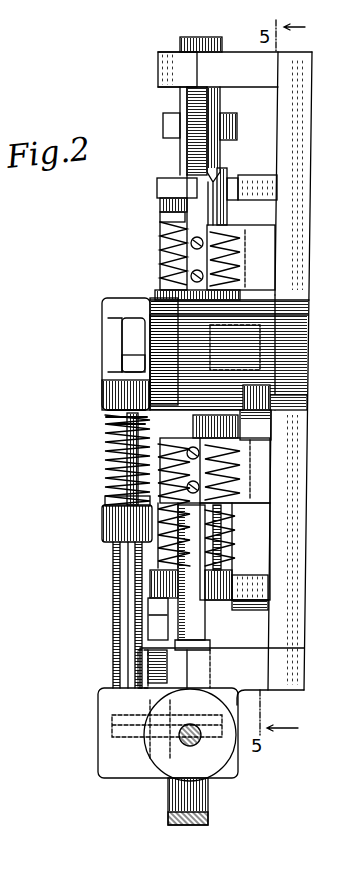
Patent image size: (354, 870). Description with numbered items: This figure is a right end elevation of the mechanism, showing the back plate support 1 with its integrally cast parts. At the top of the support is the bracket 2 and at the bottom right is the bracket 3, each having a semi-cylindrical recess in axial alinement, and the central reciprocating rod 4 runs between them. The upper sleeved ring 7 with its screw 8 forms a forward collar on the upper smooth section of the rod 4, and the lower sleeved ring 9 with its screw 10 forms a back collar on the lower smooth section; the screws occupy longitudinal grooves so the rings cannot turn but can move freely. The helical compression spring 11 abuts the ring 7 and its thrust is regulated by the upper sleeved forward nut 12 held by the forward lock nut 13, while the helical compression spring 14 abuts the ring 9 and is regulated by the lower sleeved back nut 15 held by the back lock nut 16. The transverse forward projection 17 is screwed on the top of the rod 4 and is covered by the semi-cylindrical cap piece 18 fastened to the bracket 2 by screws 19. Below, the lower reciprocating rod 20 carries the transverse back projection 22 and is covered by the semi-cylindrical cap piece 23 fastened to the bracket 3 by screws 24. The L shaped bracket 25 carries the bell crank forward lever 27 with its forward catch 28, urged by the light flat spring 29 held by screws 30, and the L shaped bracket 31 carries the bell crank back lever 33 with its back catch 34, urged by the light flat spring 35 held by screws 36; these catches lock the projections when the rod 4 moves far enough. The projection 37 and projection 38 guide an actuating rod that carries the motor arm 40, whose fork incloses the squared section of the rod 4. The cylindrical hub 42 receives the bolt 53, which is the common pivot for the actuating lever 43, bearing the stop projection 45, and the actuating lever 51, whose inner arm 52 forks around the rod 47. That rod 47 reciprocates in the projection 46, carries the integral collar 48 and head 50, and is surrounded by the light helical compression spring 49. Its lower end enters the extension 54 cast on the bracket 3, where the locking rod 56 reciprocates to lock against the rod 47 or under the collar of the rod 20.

The back plate support 1 is at (296, 112).
The bracket 2 is at (247, 77).
The bracket 3 is at (245, 675).
The central reciprocating rod 4 is at (110, 432).
The upper sleeved ring 7 is at (245, 298).
The screw 8 is at (250, 308).
The lower sleeved ring 9 is at (245, 428).
The screw 10 is at (275, 428).
The helical compression spring 11 is at (168, 217).
The upper sleeved forward nut 12 is at (165, 205).
The forward lock nut 13 is at (160, 188).
The helical compression spring 14 is at (235, 548).
The lower sleeved back nut 15 is at (152, 582).
The back lock nut 16 is at (155, 605).
The transverse forward projection 17 is at (165, 125).
The semi-cylindrical cap piece 18 is at (190, 77).
The screws 19 is at (158, 68).
The lower reciprocating rod 20 is at (178, 790).
The transverse back projection 22 is at (185, 628).
The semi-cylindrical cap piece 23 is at (145, 688).
The screws 24 is at (150, 658).
The L shaped bracket 25 is at (235, 245).
The bell crank forward lever 27 is at (225, 170).
The forward catch 28 is at (195, 97).
The light flat spring 29 is at (218, 150).
The screws 30 is at (172, 268).
The L shaped bracket 31 is at (232, 478).
The bell crank back lever 33 is at (245, 518).
The back catch 34 is at (215, 645).
The light flat spring 35 is at (235, 578).
The screws 36 is at (178, 478).
The projection 37 is at (255, 200).
The projection 38 is at (250, 600).
The motor arm 40 is at (285, 402).
The cylindrical hub 42 is at (305, 355).
The actuating lever 43 is at (128, 352).
The stop projection 45 is at (150, 395).
The projection 46 is at (275, 355).
The rod 47 is at (128, 555).
The integral collar 48 is at (115, 523).
The light helical compression spring 49 is at (110, 500).
The head 50 is at (108, 302).
The actuating lever 51 is at (160, 320).
The inner arm 52 is at (115, 330).
The bolt 53 is at (125, 345).
The extension 54 is at (112, 765).
The locking rod 56 is at (200, 745).